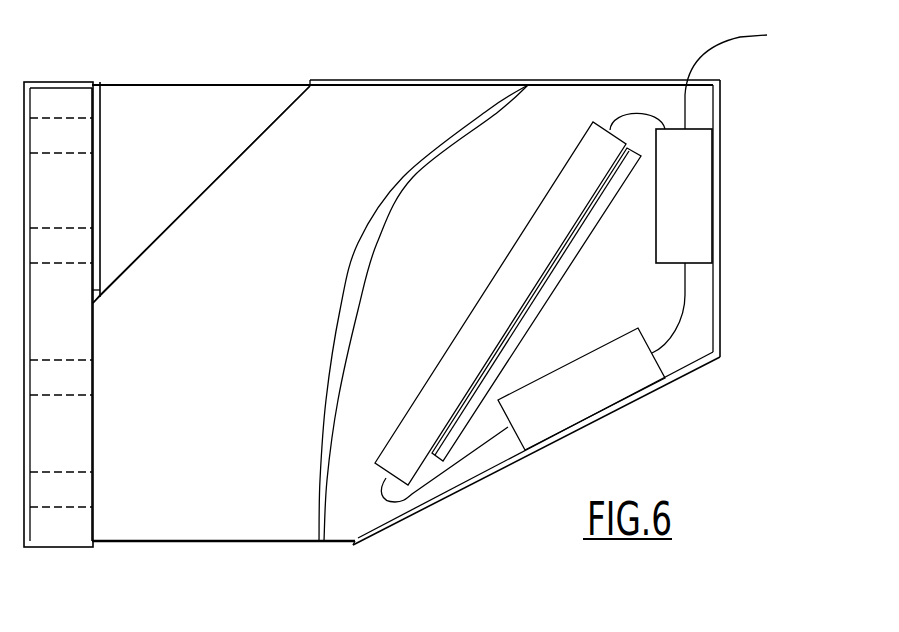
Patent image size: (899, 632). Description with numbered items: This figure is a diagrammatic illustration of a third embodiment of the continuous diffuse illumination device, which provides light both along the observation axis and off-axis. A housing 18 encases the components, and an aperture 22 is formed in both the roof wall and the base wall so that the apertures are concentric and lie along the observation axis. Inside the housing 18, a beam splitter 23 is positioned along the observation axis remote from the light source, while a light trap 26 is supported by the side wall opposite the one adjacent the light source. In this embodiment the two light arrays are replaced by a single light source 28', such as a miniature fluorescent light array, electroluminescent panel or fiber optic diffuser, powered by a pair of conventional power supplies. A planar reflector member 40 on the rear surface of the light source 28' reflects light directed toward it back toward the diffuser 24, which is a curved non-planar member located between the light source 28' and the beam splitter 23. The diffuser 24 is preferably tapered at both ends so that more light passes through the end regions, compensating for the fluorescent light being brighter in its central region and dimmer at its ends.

The housing 18 is at (730, 198).
The aperture 22 is at (232, 56).
The beam splitter 23 is at (247, 143).
The light diffuser 24 is at (305, 302).
The light trap 26 is at (100, 99).
The single light source 28' is at (513, 307).
The planar reflector member 40 is at (454, 455).